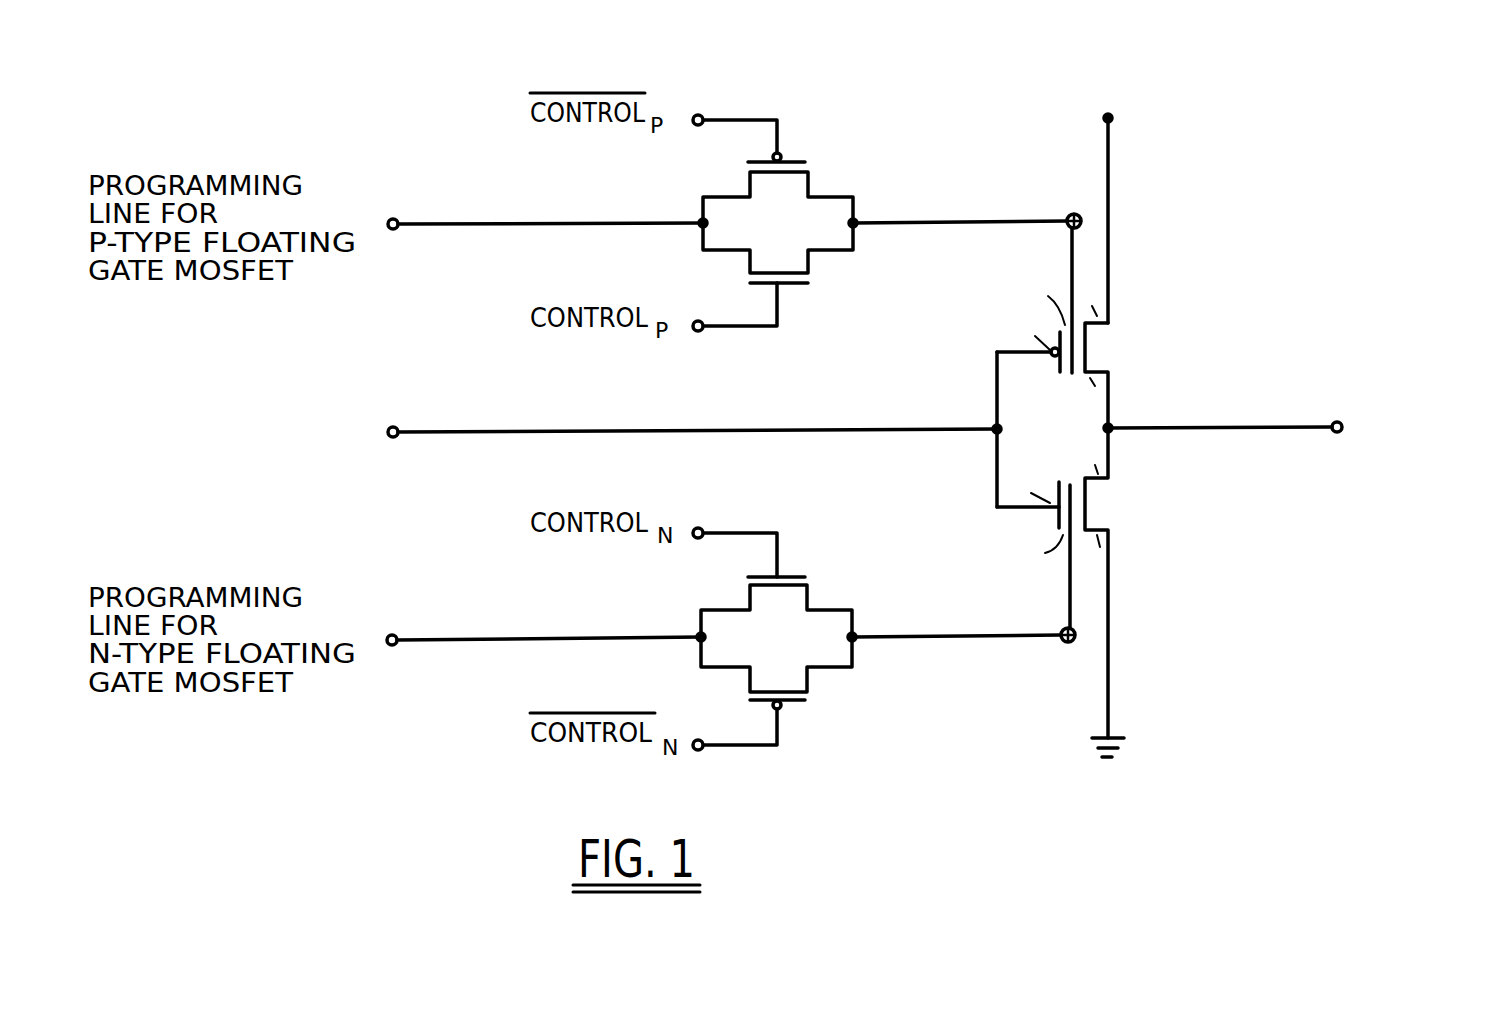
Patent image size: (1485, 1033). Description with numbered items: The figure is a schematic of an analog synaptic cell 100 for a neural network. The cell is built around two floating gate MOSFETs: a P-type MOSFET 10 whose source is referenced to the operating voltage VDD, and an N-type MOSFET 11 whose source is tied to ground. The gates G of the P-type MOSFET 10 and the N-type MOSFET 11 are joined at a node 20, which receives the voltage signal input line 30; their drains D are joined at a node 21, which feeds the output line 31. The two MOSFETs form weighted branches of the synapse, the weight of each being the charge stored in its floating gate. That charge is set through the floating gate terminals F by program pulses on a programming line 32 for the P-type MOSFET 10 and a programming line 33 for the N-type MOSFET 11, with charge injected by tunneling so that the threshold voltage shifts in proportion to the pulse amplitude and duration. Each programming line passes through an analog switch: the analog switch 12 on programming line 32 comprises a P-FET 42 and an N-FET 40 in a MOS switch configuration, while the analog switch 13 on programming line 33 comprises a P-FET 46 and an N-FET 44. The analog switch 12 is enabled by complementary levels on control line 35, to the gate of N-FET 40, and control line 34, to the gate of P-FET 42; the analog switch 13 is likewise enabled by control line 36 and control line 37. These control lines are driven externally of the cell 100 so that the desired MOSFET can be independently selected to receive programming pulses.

The analog synaptic cell 100 is at (892, 51).
The P-type MOSFET 10 is at (1063, 375).
The N-type MOSFET 11 is at (1068, 481).
The analog switch 12 is at (792, 241).
The analog switch 13 is at (792, 651).
The node 20 is at (988, 427).
The node 21 is at (1123, 423).
The voltage signal input line 30 is at (668, 430).
The output line 31 is at (1198, 427).
The programming line 32 is at (990, 218).
The programming line 33 is at (981, 632).
The control line 34 is at (736, 116).
The control line 35 is at (741, 327).
The control line 36 is at (761, 531).
The control line 37 is at (738, 747).
The N-FET 40 is at (792, 288).
The P-FET 42 is at (785, 149).
The N-FET 44 is at (780, 568).
The P-FET 46 is at (784, 707).